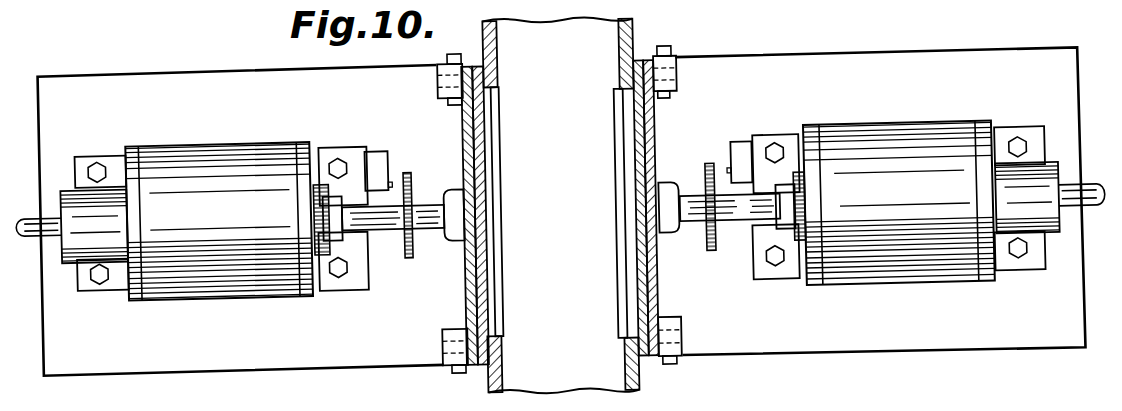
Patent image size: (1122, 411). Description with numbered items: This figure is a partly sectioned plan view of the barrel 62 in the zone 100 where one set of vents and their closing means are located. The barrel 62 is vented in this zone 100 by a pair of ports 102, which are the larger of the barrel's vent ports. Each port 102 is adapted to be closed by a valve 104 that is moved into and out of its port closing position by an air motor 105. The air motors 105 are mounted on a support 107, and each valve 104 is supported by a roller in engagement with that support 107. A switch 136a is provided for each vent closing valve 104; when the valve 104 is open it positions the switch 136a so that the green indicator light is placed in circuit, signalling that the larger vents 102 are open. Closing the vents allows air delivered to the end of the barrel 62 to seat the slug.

The barrel 62 is at (637, 27).
The vent zone 100 is at (714, 341).
The port 102 is at (621, 285).
The valve 104 is at (464, 266).
The air motor 105 is at (224, 277).
The support 107 is at (995, 355).
The switch 136a is at (732, 147).